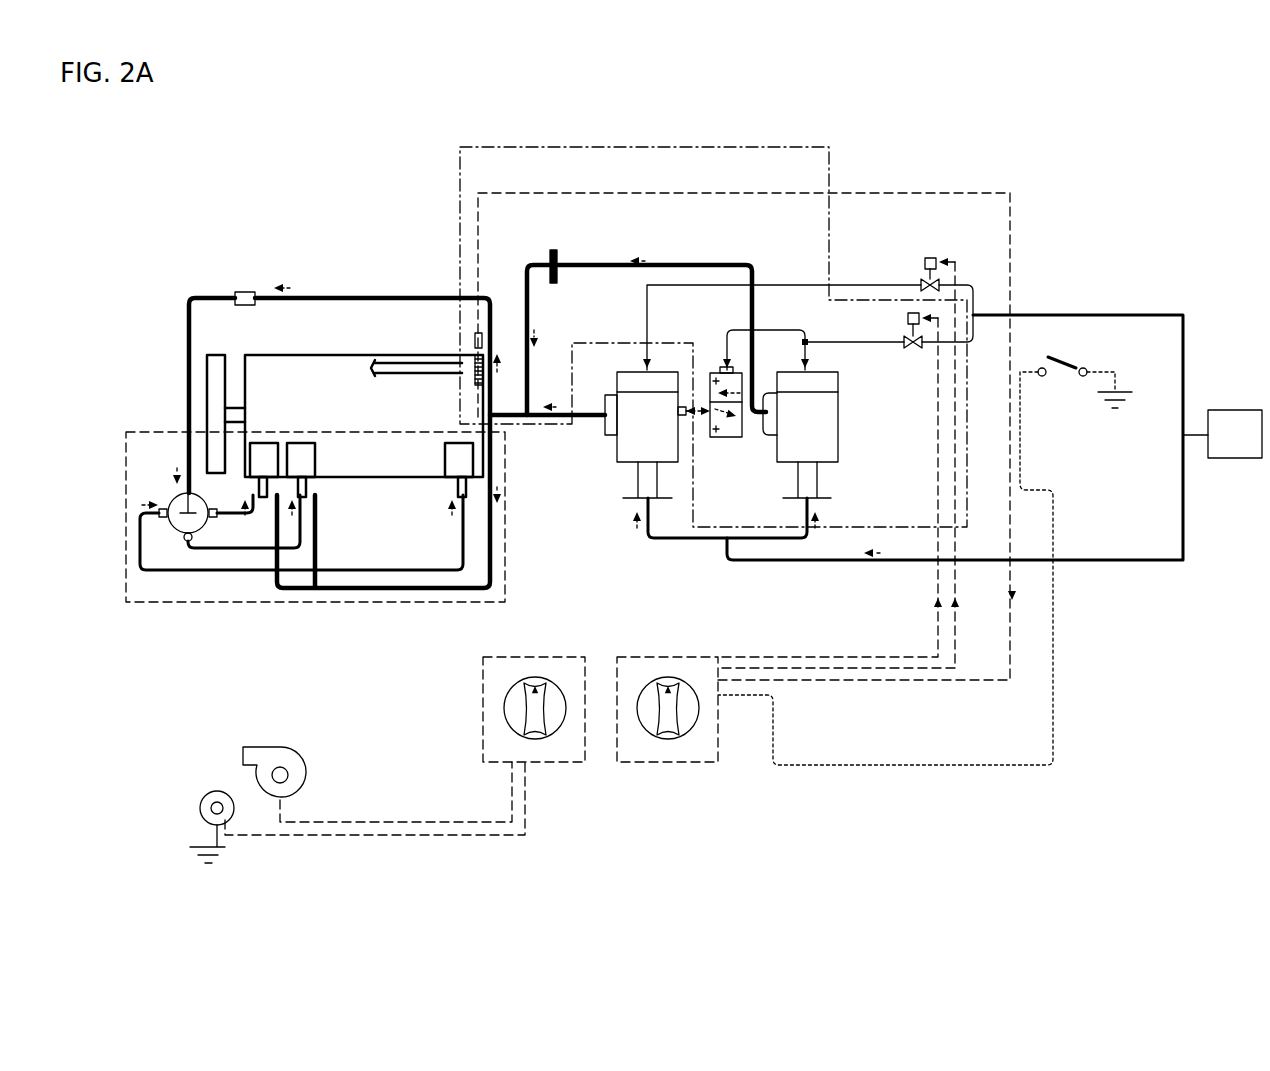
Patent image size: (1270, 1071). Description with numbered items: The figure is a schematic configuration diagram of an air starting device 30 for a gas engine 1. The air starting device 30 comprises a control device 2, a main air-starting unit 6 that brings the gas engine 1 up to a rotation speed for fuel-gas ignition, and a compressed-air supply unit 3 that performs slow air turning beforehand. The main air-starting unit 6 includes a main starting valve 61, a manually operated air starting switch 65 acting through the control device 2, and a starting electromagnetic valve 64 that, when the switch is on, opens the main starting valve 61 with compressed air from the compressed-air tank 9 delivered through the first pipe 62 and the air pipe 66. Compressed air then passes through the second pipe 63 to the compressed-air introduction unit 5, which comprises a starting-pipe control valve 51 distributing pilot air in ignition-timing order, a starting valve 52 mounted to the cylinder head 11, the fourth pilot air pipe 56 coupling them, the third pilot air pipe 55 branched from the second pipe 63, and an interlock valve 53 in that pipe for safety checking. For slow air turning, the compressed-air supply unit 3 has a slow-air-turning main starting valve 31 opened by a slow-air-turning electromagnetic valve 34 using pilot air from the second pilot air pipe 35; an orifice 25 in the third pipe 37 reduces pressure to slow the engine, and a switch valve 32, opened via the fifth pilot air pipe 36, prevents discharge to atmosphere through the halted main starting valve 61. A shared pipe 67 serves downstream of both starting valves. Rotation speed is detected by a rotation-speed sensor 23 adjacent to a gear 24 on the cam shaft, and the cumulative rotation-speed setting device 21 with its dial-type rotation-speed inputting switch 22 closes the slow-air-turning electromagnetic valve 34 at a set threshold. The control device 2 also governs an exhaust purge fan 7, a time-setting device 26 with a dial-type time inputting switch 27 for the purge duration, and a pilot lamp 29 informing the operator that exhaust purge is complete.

The gas engine 1 is at (320, 355).
The control device 2 is at (604, 770).
The compressed-air supply unit 3 is at (698, 128).
The compressed-air introduction unit 5 is at (289, 612).
The main air-starting unit 6 is at (606, 466).
The exhaust purge fan 7 is at (302, 752).
The compressed-air tank 9 is at (1230, 410).
The cylinder head 11 is at (216, 452).
The cumulative rotation-speed setting device 21 is at (653, 763).
The rotation-speed inputting switch 22 is at (687, 712).
The rotation-speed sensor 23 is at (485, 336).
The gear for driving a cam shaft 24 is at (472, 380).
The orifice 25 is at (562, 262).
The time-setting device 26 is at (543, 763).
The time (minute) inputting switch 27 is at (507, 722).
The pilot lamp 29 is at (202, 798).
The air starting device 30 is at (942, 122).
The slow-air-turning main starting valve 31 is at (774, 458).
The switch valve 32 is at (713, 375).
The slow-air-turning electromagnetic valve 34 is at (906, 318).
The second pilot air pipe 35 is at (845, 340).
The fifth pilot air pipe 36 is at (773, 330).
The third pipe 37 is at (674, 263).
The starting-pipe control valve 51 is at (166, 497).
The starting valve 52 is at (310, 486).
The interlock valve 53 is at (245, 291).
The third pilot air pipe 55 is at (345, 297).
The fourth pilot air pipe 56 is at (240, 503).
The main starting valve 61 is at (612, 443).
The first pipe 62 is at (782, 562).
The second pipe 63 is at (415, 592).
The starting electromagnetic valve 64 is at (928, 258).
The air starting switch 65 is at (1061, 363).
The air pipe 66 is at (792, 285).
The shared pipe 67 is at (507, 420).